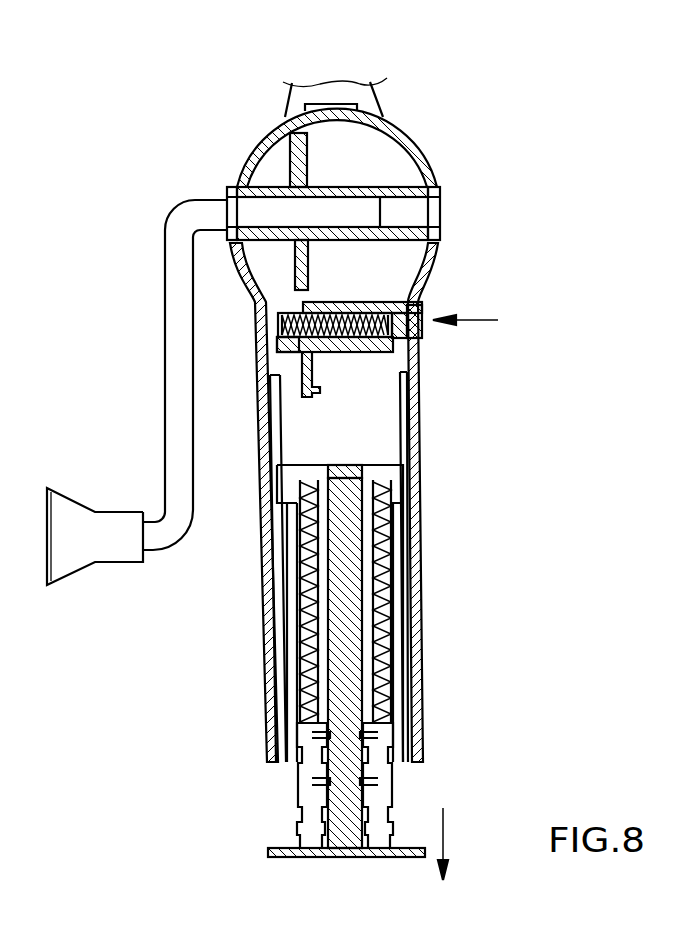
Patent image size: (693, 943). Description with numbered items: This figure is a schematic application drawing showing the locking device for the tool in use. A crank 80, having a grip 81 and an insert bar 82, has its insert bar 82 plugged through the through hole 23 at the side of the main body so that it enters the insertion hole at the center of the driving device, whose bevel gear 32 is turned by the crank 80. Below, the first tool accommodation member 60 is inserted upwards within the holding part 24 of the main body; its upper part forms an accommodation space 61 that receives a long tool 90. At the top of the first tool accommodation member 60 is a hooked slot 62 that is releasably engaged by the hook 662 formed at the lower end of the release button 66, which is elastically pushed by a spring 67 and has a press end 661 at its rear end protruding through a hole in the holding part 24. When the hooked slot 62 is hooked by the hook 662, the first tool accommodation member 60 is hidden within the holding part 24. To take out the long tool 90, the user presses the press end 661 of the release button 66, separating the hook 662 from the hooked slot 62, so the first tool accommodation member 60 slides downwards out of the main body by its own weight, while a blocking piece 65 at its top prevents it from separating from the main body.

The through hole 23 is at (440, 208).
The holding part 24 is at (265, 673).
The bevel gear 32 is at (307, 153).
The first tool accommodation member 60 is at (392, 550).
The accommodation space 61 is at (363, 612).
The hooked slot 62 is at (365, 470).
The blocking piece 65 is at (397, 475).
The release button 66 is at (405, 285).
The press end 661 is at (422, 338).
The hook 662 is at (320, 389).
The spring 67 is at (270, 342).
The crank 80 is at (175, 228).
The grip 81 is at (68, 563).
The insert bar 82 is at (265, 210).
The long tool 90 is at (297, 795).